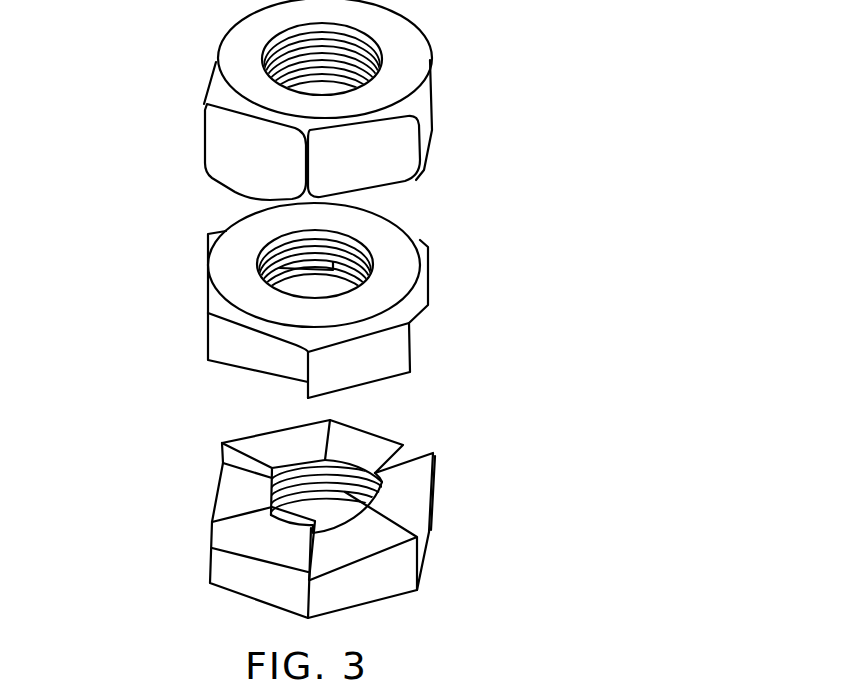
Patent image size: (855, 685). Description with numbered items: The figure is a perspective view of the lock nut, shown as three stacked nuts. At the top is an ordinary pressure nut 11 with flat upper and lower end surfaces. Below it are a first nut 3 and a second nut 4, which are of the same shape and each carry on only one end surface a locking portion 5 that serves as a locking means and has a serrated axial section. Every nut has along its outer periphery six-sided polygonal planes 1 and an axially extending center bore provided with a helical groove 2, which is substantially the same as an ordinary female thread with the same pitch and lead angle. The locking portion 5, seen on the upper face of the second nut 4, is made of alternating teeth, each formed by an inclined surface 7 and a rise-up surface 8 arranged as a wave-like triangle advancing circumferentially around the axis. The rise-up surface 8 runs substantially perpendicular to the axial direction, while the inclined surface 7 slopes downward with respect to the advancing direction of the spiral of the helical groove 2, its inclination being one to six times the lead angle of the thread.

The ordinary pressure nut 11 is at (428, 105).
The helical groove 2 is at (355, 250).
The first nut 3 is at (423, 300).
The six-sided polygonal planes 1 is at (309, 415).
The second nut 4 is at (309, 524).
The rise-up surface 8 is at (225, 530).
The locking portion 5 is at (178, 543).
The inclined surface 7 is at (270, 545).